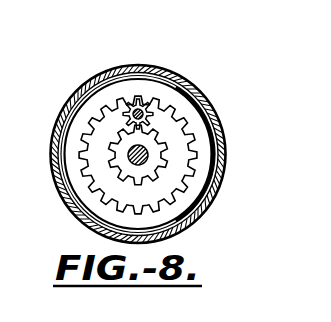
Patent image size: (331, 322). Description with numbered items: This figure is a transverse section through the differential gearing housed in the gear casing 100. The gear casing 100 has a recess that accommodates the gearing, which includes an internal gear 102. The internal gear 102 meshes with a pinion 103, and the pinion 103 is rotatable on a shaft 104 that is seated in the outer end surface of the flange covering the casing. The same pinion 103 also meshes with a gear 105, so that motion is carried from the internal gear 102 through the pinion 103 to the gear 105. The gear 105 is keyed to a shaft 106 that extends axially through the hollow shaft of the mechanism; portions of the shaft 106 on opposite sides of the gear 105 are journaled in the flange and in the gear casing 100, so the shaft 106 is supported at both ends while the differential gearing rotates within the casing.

The gear casing 100 is at (140, 66).
The internal gear 102 is at (188, 131).
The pinion 103 is at (157, 117).
The shaft 104 is at (140, 111).
The gear 105 is at (152, 161).
The shaft 106 is at (128, 155).